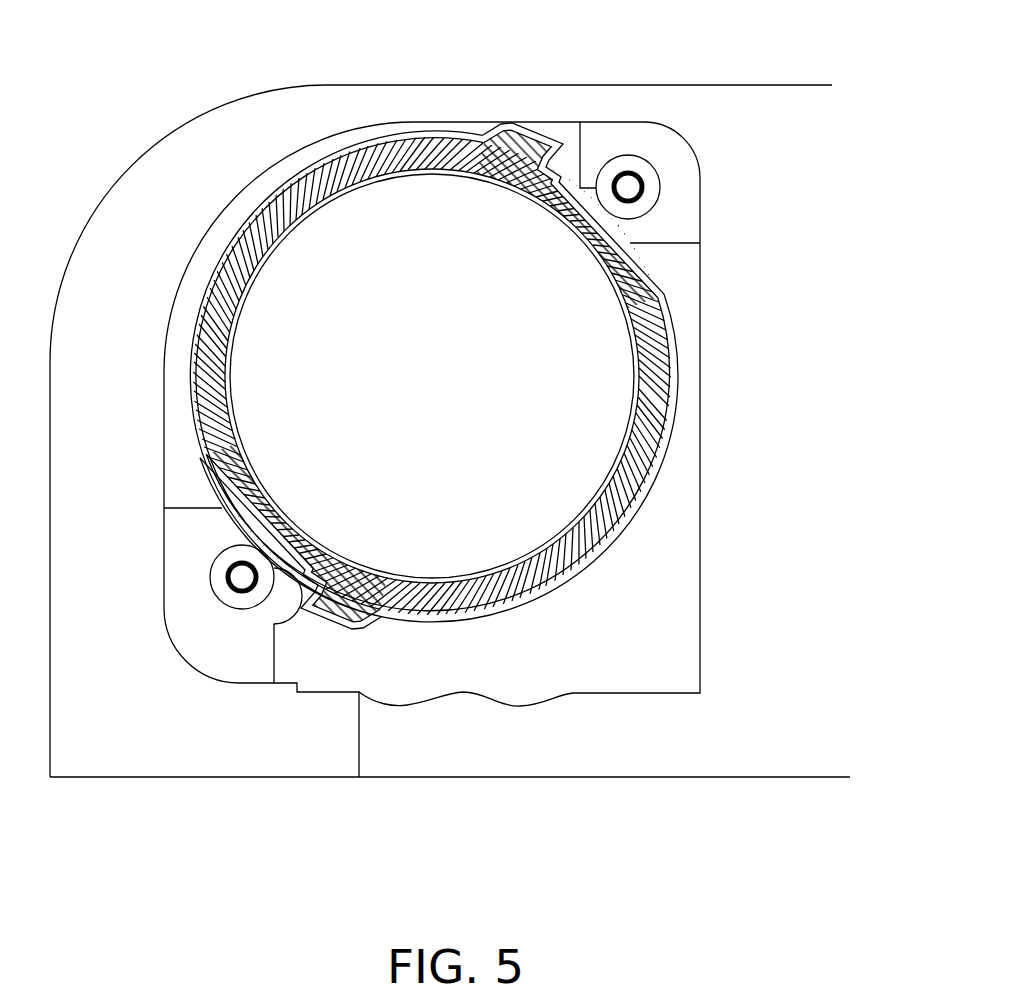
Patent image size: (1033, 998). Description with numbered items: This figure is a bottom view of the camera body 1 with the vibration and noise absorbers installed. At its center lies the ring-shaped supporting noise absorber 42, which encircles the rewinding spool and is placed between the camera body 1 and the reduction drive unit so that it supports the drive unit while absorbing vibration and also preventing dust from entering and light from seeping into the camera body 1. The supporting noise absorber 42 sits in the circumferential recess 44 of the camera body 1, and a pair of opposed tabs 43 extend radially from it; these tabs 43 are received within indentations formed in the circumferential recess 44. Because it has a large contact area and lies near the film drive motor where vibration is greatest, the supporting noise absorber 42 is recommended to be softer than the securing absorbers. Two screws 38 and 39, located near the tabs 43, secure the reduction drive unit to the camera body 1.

The camera body 1 is at (198, 153).
The screw 38 is at (243, 580).
The screw 39 is at (637, 183).
The supporting noise absorber 42 is at (657, 385).
The tabs 43 is at (495, 138).
The circumferential recess 44 is at (362, 153).